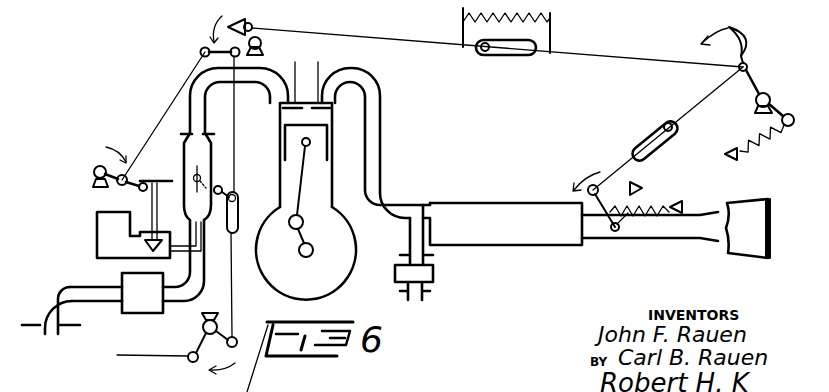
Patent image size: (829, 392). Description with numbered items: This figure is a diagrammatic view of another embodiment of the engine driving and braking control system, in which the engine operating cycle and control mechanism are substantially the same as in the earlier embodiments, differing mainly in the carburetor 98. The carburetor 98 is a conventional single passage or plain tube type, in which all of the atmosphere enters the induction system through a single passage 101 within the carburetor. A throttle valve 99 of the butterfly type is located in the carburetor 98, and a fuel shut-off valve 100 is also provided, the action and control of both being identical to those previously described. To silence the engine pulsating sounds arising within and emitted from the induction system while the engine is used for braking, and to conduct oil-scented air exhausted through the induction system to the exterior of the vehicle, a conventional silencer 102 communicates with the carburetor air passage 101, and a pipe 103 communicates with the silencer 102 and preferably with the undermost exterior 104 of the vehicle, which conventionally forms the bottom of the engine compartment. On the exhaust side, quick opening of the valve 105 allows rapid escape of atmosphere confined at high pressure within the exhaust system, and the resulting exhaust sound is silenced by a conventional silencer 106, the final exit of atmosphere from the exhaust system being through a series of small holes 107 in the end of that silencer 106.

The carburetor 98 is at (186, 157).
The throttle valve 99 is at (200, 172).
The fuel shut-off valve 100 is at (150, 161).
The single passage 101 is at (196, 283).
The silencer 102 is at (122, 314).
The pipe 103 is at (90, 300).
The undermost exterior 104 is at (62, 331).
The valve 105 is at (625, 228).
The silencer 106 is at (737, 252).
The small holes 107 is at (770, 210).